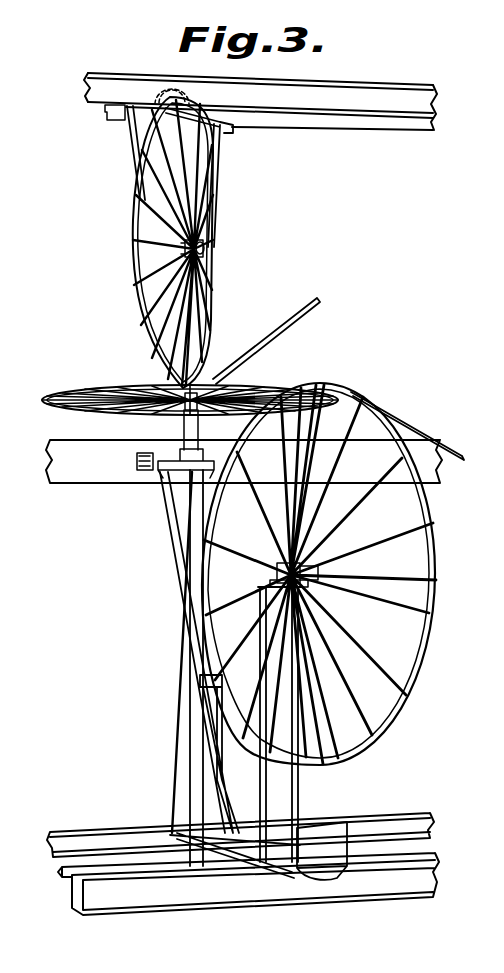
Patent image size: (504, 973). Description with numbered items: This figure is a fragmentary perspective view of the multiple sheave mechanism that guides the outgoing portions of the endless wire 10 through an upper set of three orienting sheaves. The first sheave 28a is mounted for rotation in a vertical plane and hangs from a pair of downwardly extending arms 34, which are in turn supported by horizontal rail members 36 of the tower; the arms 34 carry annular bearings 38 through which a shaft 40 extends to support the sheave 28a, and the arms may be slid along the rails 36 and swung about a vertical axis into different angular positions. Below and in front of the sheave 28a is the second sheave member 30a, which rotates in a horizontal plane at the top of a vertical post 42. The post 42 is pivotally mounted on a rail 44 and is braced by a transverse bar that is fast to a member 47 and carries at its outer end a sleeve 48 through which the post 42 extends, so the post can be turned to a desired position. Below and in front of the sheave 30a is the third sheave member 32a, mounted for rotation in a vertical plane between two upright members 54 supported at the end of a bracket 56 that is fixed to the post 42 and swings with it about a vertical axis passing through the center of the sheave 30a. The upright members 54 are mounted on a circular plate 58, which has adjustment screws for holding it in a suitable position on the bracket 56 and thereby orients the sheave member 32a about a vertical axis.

The endless wire 10 is at (294, 319).
The sheave 28a is at (133, 216).
The second sheave member 30a is at (62, 386).
The third sheave member 32a is at (205, 562).
The downwardly extending arms 34 is at (216, 156).
The horizontal rail members 36 is at (388, 92).
The annular bearings 38 is at (206, 250).
The shaft 40 is at (205, 245).
The vertical post 42 is at (192, 507).
The rail 44 is at (157, 890).
The member 47 is at (87, 466).
The sleeve 48 is at (183, 456).
The upright members 54 is at (283, 840).
The bracket 56 is at (242, 870).
The circular plate 58 is at (287, 872).